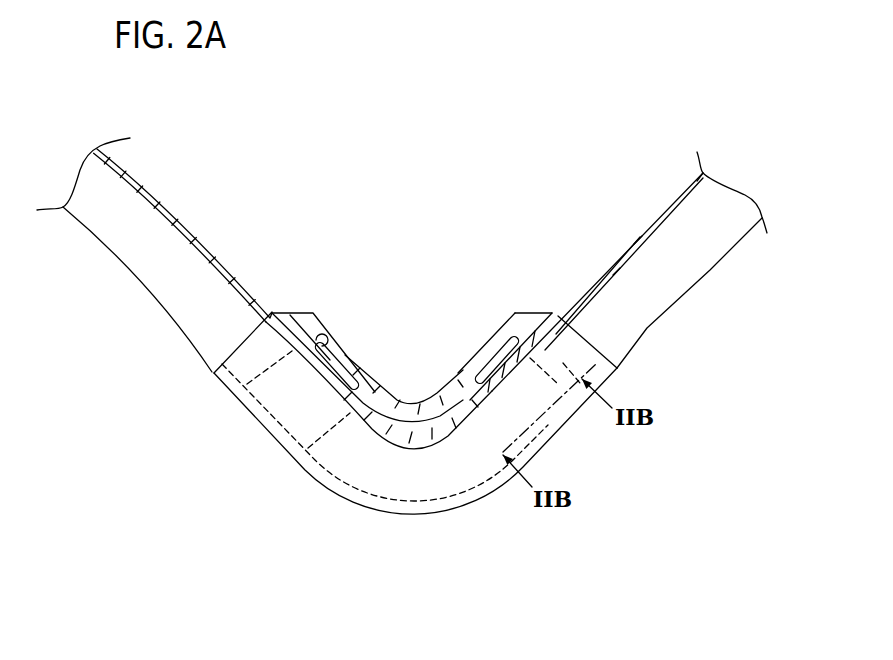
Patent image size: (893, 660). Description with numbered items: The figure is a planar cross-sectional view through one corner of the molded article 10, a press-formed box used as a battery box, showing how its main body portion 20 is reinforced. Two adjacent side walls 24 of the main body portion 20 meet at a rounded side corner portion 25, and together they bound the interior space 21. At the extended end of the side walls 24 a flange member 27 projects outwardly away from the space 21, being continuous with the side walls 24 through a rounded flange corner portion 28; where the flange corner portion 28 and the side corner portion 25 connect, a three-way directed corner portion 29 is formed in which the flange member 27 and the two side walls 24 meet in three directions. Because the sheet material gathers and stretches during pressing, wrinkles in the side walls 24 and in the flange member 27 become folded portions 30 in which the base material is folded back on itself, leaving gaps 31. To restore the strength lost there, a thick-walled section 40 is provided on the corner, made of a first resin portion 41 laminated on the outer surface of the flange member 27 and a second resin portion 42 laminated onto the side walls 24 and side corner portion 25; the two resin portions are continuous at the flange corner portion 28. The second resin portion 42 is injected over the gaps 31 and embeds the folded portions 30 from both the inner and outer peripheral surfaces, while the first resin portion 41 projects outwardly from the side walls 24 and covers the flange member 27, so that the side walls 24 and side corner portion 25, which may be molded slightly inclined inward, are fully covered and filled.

The molded article 10 is at (402, 131).
The main body portion 20 is at (93, 265).
The space 21 is at (590, 289).
The side wall 24 is at (220, 271).
The side corner portion 25 is at (402, 420).
The flange member 27 is at (707, 272).
The flange corner portion 28 is at (613, 275).
The three-way directed corner portion 29 is at (442, 437).
The folded portion 30 is at (320, 347).
The gap 31 is at (318, 375).
The thick-walled section 40 is at (323, 494).
The first resin portion 41 is at (277, 410).
The second resin portion 42 is at (357, 355).